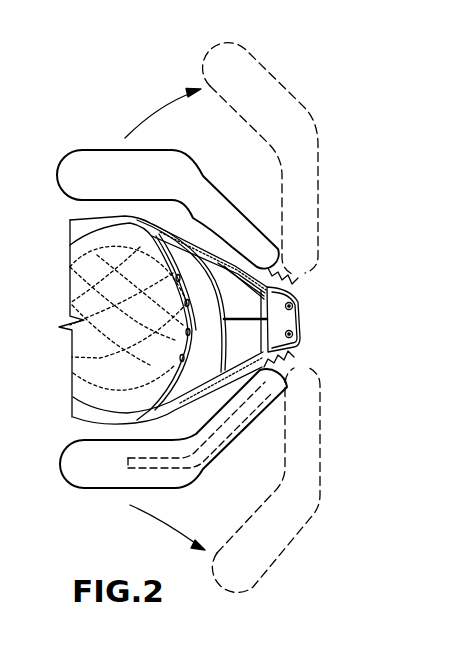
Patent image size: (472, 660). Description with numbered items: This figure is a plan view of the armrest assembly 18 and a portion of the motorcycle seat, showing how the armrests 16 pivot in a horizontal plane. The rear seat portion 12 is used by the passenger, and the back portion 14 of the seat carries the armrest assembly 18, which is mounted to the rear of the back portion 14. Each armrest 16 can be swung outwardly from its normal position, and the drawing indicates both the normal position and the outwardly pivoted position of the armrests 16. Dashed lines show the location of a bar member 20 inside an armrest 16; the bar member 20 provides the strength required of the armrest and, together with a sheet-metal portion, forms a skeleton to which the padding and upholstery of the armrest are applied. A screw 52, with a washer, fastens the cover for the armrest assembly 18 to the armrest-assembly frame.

The rear seat portion 12 is at (94, 325).
The back portion 14 is at (187, 336).
The armrests 16 is at (203, 179).
The armrest assembly 18 is at (314, 323).
The bar member 20 is at (177, 470).
The screw 52 is at (299, 304).